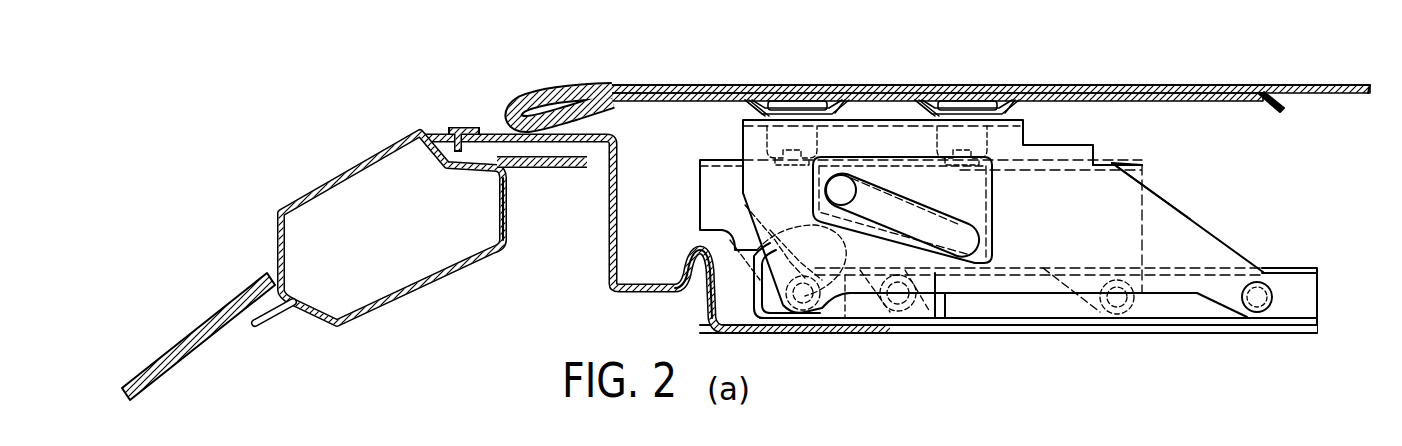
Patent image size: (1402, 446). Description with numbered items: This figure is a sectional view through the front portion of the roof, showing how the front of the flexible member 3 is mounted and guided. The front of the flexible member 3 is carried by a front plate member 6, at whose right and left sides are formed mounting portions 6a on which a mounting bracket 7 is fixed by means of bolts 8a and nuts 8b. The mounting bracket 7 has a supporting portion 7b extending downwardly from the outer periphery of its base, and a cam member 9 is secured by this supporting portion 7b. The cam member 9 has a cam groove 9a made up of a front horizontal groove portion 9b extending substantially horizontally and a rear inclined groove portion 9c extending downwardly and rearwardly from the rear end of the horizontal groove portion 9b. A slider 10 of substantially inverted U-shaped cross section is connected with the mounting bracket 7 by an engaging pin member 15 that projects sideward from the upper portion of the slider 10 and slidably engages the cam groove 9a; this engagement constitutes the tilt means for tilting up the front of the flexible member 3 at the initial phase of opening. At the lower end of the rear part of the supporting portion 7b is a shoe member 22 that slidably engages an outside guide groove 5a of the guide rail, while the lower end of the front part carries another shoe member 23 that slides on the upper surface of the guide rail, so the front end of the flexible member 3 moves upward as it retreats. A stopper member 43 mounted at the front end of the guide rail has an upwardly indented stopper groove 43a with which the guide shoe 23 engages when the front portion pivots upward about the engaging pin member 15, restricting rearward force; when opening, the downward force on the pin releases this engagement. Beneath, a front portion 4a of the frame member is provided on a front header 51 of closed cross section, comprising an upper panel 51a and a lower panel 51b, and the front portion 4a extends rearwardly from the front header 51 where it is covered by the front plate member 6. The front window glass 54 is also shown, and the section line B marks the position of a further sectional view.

The flexible member 3 is at (1205, 86).
The front portion of the frame member 4a is at (617, 136).
The outside guide groove 5a is at (1318, 298).
The front plate member 6 is at (1094, 93).
The mounting portion 6a is at (760, 96).
The mounting bracket 7 is at (1155, 187).
The supporting portion 7b is at (1192, 220).
The bolt 8a is at (812, 98).
The nut 8b is at (760, 138).
The cam member 9 is at (994, 192).
The cam groove 9a is at (862, 205).
The front horizontal groove portion 9b is at (812, 190).
The rear inclined groove portion 9c is at (986, 235).
The slider 10 is at (700, 178).
The engaging pin member 15 is at (857, 190).
The shoe member 22 is at (1244, 266).
The shoe member 23 is at (712, 318).
The stopper member 43 is at (820, 320).
The stopper groove 43a is at (774, 247).
The front header 51 is at (446, 270).
The upper panel 51a is at (413, 128).
The lower panel 51b is at (500, 248).
The front window glass 54 is at (185, 362).
The section line B is at (900, 38).